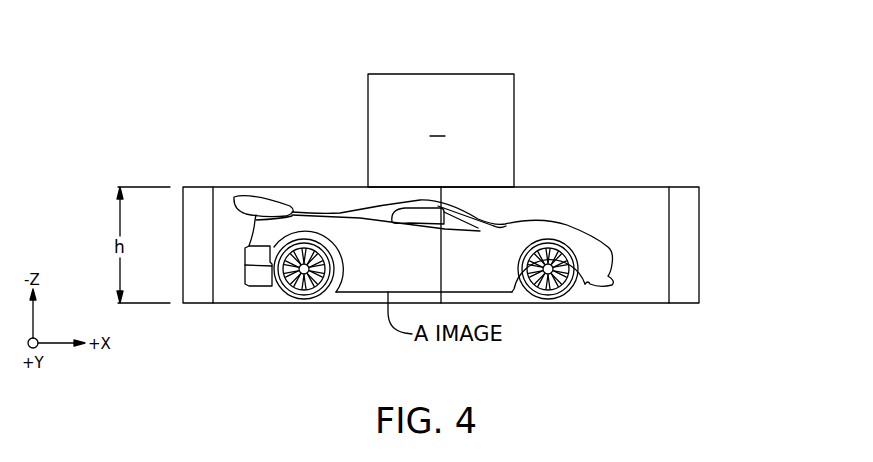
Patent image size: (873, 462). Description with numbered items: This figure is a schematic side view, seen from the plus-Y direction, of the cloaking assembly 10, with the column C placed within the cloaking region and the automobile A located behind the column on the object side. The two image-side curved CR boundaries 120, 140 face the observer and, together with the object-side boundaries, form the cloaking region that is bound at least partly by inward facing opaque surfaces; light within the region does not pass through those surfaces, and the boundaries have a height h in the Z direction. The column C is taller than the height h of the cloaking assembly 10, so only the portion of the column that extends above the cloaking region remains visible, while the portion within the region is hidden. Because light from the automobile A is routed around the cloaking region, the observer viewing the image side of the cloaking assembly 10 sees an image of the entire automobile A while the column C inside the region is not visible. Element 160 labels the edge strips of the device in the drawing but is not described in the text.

The cloaking assembly 10 is at (488, 188).
The image-side curved CR boundary 120 is at (565, 281).
The image-side curved CR boundary 140 is at (308, 282).
The edge region 160 is at (474, 203).